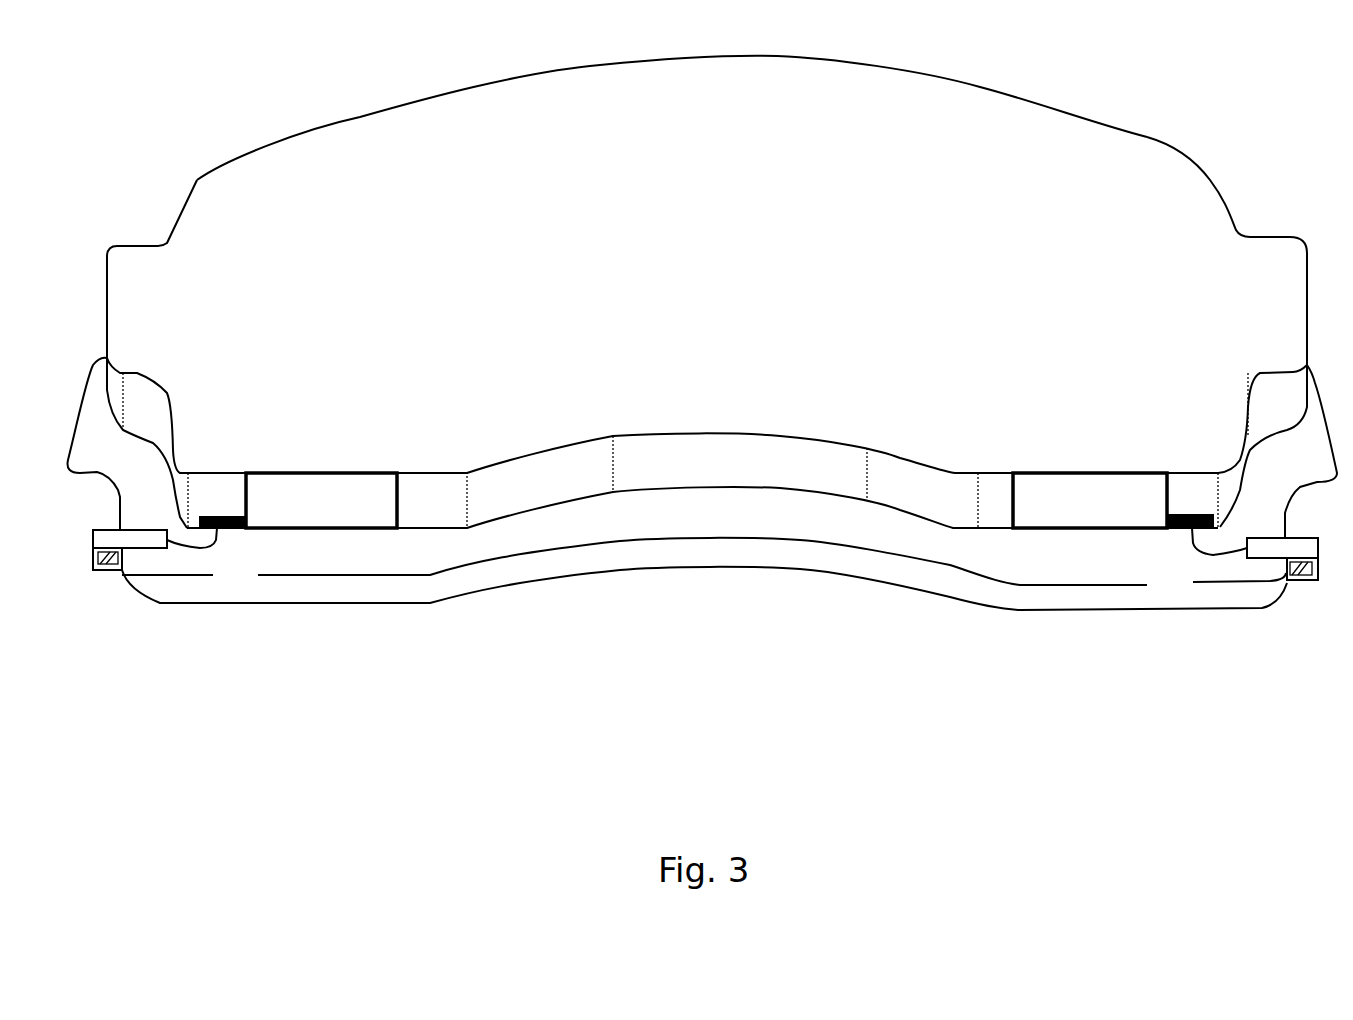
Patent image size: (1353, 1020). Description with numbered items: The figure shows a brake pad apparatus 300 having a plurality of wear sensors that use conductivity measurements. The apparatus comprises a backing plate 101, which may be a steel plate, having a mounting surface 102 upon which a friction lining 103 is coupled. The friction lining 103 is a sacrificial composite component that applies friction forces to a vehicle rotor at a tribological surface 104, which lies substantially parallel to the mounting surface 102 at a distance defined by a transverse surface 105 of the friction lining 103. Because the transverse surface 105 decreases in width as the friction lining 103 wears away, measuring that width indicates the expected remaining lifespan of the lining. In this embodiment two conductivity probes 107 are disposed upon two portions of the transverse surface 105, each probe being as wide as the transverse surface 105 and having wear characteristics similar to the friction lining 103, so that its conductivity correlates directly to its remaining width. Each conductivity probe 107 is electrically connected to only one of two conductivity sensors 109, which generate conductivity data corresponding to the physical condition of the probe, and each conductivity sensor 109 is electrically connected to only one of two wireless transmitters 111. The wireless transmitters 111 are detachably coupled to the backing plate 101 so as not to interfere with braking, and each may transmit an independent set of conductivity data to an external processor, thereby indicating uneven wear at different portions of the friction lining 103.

The brake pad apparatus 300 is at (124, 116).
The backing plate 101 is at (623, 557).
The mounting surface 102 is at (575, 525).
The friction lining 103 is at (703, 297).
The tribological surface 104 is at (1051, 130).
The transverse surface 105 is at (793, 470).
The conductivity probe 107 is at (305, 495).
The conductivity sensor 109 is at (233, 532).
The wireless transmitter 111 is at (110, 573).